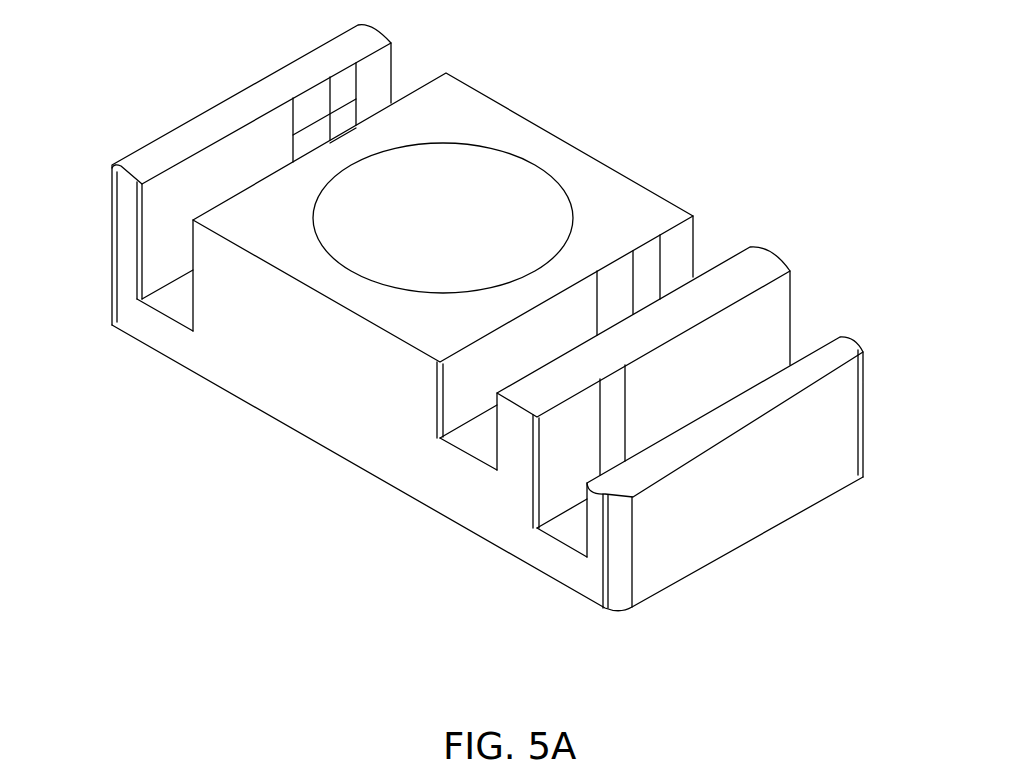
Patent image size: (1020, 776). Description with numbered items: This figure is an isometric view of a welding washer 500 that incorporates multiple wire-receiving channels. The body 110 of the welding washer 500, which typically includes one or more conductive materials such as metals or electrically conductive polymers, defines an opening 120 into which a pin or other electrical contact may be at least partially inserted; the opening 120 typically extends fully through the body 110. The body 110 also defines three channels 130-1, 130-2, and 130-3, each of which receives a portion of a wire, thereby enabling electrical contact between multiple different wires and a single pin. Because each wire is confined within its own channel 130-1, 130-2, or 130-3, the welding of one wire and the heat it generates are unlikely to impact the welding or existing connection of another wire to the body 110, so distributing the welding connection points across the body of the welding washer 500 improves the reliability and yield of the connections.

The welding washer 500 is at (201, 61).
The body 110 is at (507, 102).
The opening 120 is at (530, 202).
The first channel 130-1 is at (173, 303).
The second channel 130-2 is at (467, 438).
The third channel 130-3 is at (548, 527).